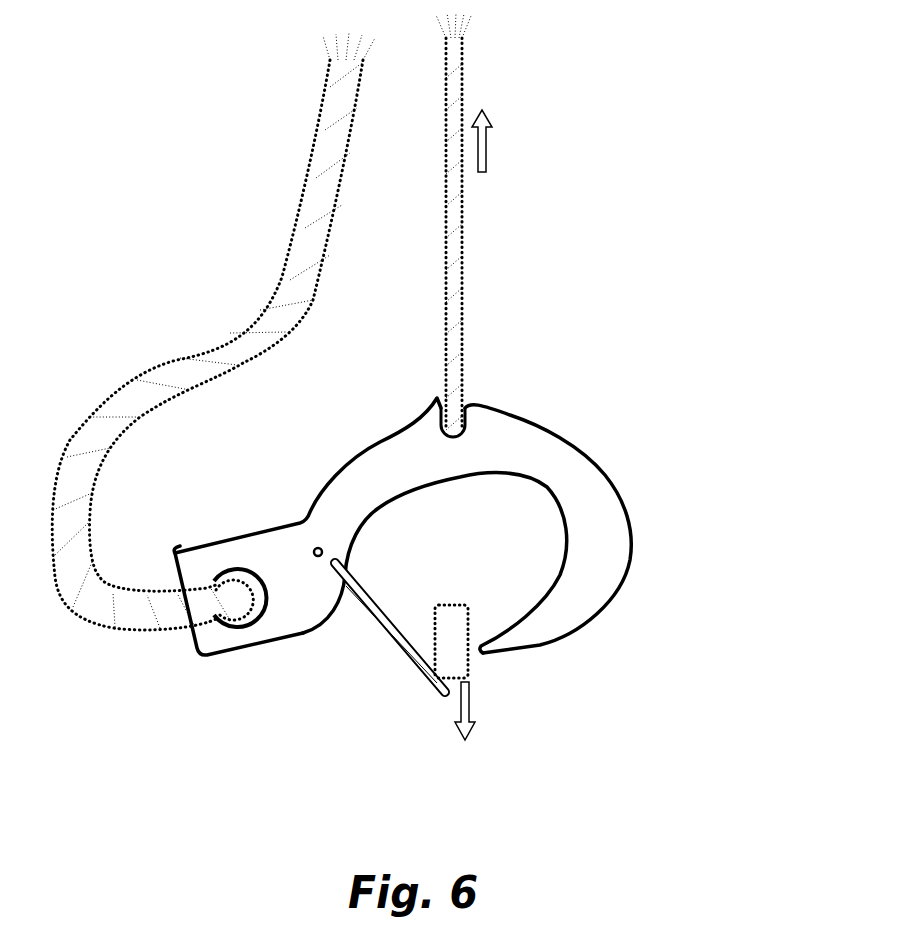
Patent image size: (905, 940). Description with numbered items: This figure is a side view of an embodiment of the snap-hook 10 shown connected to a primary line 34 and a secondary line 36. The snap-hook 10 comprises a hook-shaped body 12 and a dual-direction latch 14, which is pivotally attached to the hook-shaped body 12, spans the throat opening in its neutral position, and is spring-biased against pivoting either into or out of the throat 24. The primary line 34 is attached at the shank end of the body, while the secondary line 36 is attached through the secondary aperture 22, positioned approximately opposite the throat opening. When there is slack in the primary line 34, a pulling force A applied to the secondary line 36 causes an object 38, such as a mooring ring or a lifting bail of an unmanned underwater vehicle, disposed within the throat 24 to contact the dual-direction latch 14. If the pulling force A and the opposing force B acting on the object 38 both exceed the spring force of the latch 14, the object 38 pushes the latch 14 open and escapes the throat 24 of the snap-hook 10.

The snap-hook 10 is at (706, 411).
The hook-shaped body 12 is at (445, 526).
The dual-direction latch 14 is at (400, 652).
The secondary aperture 22 is at (468, 428).
The throat 24 is at (436, 561).
The primary line 34 is at (283, 270).
The secondary line 36 is at (462, 279).
The object 38 is at (457, 603).